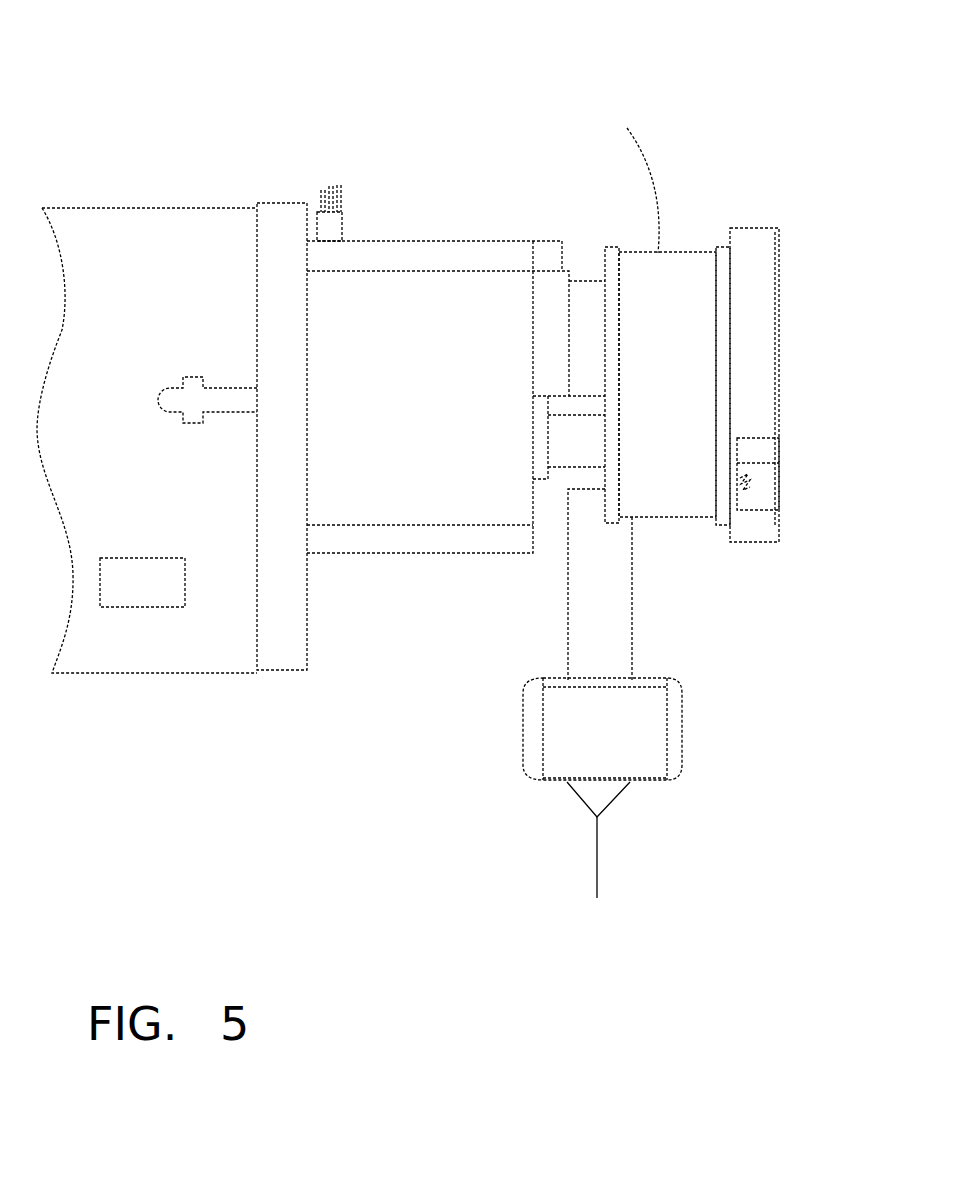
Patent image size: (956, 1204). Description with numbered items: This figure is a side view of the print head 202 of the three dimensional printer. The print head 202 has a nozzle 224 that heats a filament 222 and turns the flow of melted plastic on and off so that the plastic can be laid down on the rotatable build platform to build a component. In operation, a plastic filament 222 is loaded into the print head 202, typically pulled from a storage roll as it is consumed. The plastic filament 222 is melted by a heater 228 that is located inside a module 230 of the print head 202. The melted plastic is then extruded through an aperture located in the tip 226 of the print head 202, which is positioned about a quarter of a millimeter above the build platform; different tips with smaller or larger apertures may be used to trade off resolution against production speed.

The print head 202 is at (695, 68).
The filament 222 is at (642, 145).
The nozzle 224 is at (645, 732).
The tip 226 is at (603, 802).
The heater 228 is at (694, 402).
The module 230 is at (718, 220).